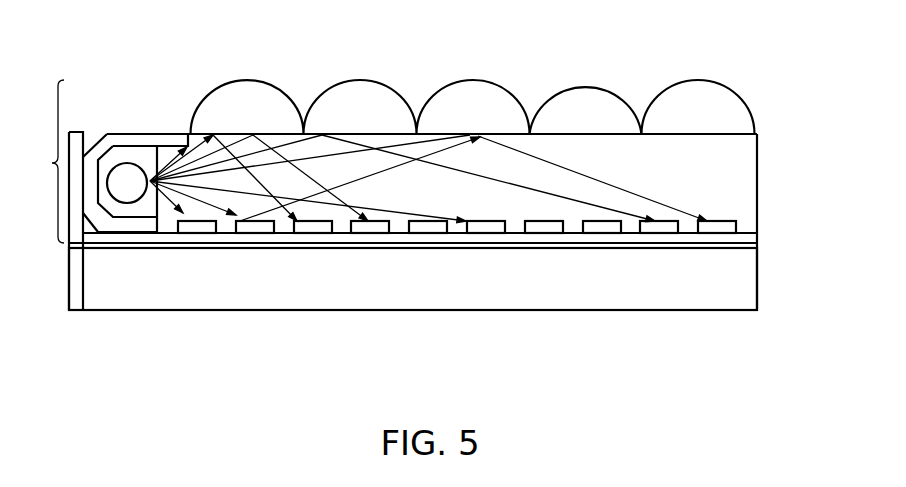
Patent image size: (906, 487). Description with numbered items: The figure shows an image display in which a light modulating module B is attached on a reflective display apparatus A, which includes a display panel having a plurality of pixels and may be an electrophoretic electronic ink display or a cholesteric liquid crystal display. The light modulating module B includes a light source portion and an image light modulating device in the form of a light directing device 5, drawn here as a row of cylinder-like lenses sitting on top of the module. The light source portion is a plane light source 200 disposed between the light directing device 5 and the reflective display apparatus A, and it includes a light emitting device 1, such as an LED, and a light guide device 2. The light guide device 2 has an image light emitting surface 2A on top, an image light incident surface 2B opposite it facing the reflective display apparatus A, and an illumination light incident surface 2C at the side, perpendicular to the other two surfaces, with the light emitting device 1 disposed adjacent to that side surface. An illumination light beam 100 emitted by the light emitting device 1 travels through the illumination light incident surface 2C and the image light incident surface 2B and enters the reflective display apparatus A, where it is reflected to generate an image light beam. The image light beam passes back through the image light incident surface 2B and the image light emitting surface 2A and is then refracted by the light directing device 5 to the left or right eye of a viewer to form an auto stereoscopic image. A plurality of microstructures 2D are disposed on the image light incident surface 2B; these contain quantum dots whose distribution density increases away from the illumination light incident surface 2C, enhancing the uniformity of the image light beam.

The light emitting device 1 is at (120, 195).
The light guide device 2 is at (708, 197).
The image light emitting surface 2A is at (741, 132).
The image light incident surface 2B is at (745, 236).
The illumination light incident surface 2C is at (167, 205).
The microstructures 2D is at (660, 237).
The light directing device 5 is at (247, 83).
The illumination light beam 100 is at (401, 212).
The plane light source 200 is at (757, 183).
The reflective display apparatus A is at (757, 274).
The light modulating module B is at (45, 161).